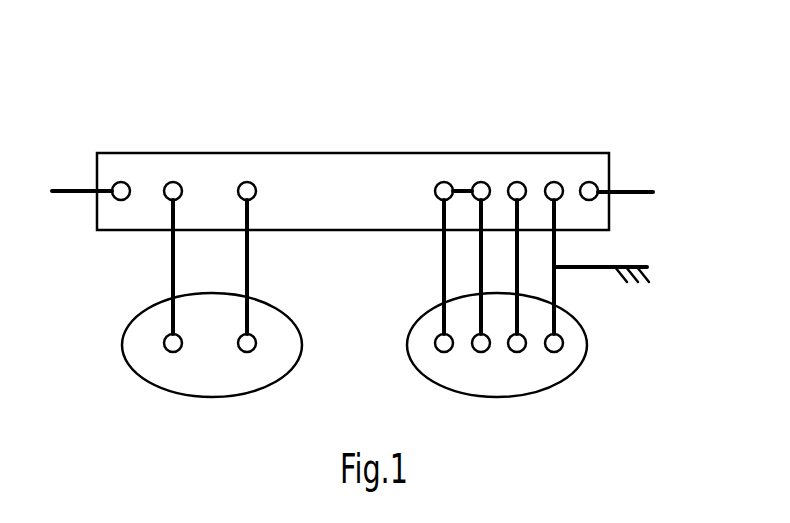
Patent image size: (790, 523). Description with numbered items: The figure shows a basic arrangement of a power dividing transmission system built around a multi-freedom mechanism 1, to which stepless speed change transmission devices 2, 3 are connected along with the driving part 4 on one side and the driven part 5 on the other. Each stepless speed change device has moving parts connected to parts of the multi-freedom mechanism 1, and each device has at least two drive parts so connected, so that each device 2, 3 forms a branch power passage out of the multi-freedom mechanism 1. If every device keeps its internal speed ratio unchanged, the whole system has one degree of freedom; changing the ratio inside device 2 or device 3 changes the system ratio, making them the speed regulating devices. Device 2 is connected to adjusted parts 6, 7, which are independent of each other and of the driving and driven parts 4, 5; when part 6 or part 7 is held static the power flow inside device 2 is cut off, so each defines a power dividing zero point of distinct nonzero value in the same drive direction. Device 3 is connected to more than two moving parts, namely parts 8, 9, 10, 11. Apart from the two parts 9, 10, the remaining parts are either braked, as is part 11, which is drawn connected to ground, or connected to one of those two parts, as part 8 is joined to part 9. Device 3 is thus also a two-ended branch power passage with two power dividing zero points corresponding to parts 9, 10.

The multi-freedom mechanism 1 is at (320, 183).
The stepless speed change transmission device 2 is at (200, 378).
The stepless speed change transmission device 3 is at (508, 380).
The driving part 4 is at (63, 187).
The driven part 5 is at (592, 184).
The adjusted part 6 is at (168, 186).
The adjusted part 7 is at (241, 186).
The moving part 8 is at (441, 187).
The moving part 9 is at (478, 187).
The moving part 10 is at (518, 186).
The moving part 11 is at (556, 186).